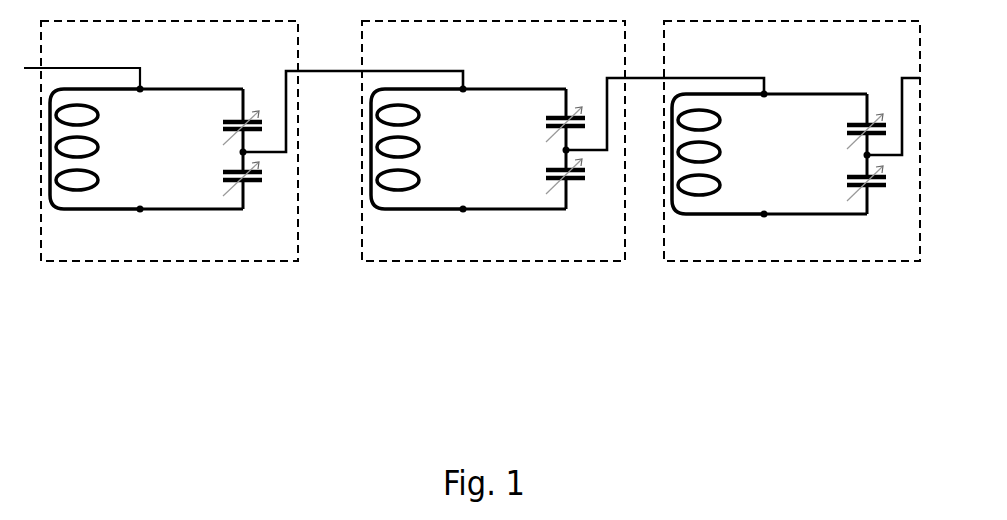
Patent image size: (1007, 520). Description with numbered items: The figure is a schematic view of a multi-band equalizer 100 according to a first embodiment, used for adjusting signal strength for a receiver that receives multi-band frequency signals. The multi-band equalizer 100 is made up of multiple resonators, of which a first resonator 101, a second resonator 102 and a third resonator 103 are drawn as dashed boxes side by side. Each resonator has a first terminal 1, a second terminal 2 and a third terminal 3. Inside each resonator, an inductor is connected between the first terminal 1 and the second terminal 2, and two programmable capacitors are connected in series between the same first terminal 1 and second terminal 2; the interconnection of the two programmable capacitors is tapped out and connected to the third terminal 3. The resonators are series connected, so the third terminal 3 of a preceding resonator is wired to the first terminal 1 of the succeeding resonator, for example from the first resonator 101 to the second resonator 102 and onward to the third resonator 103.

The multi-band equalizer 100 is at (322, 291).
The first resonator 101 is at (183, 58).
The second resonator 102 is at (514, 58).
The third resonator 103 is at (839, 58).
The first terminal 1 is at (453, 109).
The second terminal 2 is at (453, 198).
The third terminal 3 is at (577, 167).